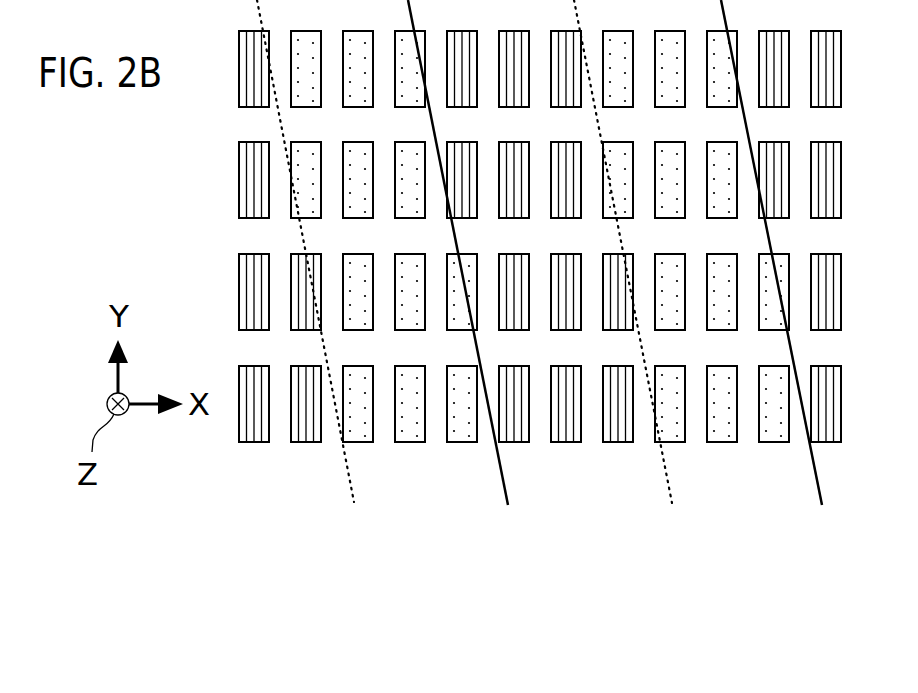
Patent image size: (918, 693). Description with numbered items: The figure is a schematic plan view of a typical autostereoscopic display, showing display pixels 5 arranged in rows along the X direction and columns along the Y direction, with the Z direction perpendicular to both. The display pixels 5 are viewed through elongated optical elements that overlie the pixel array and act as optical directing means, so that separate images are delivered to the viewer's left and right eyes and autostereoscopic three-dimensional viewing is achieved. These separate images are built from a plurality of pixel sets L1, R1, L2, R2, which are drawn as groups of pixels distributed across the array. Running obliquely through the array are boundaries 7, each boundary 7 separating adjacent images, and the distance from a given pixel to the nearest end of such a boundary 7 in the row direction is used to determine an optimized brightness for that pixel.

The display pixels 5 is at (303, 442).
The boundary 7 is at (552, 323).
The pixel set L1 is at (295, 505).
The pixel set R1 is at (413, 493).
The pixel set L2 is at (583, 495).
The pixel set R2 is at (739, 488).